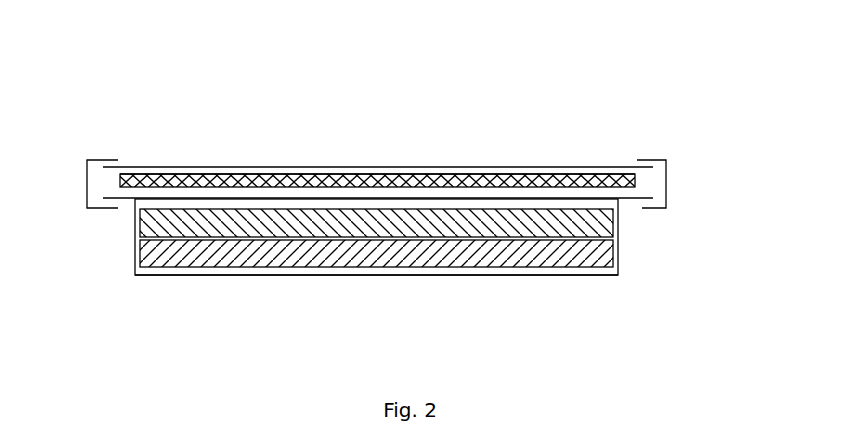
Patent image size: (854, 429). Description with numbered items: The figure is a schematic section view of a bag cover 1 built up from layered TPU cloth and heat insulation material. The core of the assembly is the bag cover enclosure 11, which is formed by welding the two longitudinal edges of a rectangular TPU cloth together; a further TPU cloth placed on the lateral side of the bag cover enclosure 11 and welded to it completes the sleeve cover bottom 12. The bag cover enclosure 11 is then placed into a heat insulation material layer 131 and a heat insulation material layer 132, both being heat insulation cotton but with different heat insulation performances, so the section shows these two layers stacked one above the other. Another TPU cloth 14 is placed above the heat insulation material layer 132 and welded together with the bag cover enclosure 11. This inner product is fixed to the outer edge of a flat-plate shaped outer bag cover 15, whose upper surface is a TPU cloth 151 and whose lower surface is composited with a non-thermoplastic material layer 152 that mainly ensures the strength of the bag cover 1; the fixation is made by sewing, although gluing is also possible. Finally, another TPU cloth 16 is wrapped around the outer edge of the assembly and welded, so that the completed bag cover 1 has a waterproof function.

The bag cover 1 is at (620, 140).
The bag cover enclosure 11 is at (618, 243).
The sleeve cover bottom 12 is at (537, 277).
The heat insulation material layer 131 is at (273, 262).
The heat insulation material layer 132 is at (395, 240).
The TPU cloth 14 is at (506, 198).
The outer bag cover 15 is at (270, 67).
The TPU cloth 151 is at (267, 167).
The non-thermoplastic material layer 152 is at (365, 178).
The TPU cloth 16 is at (93, 159).